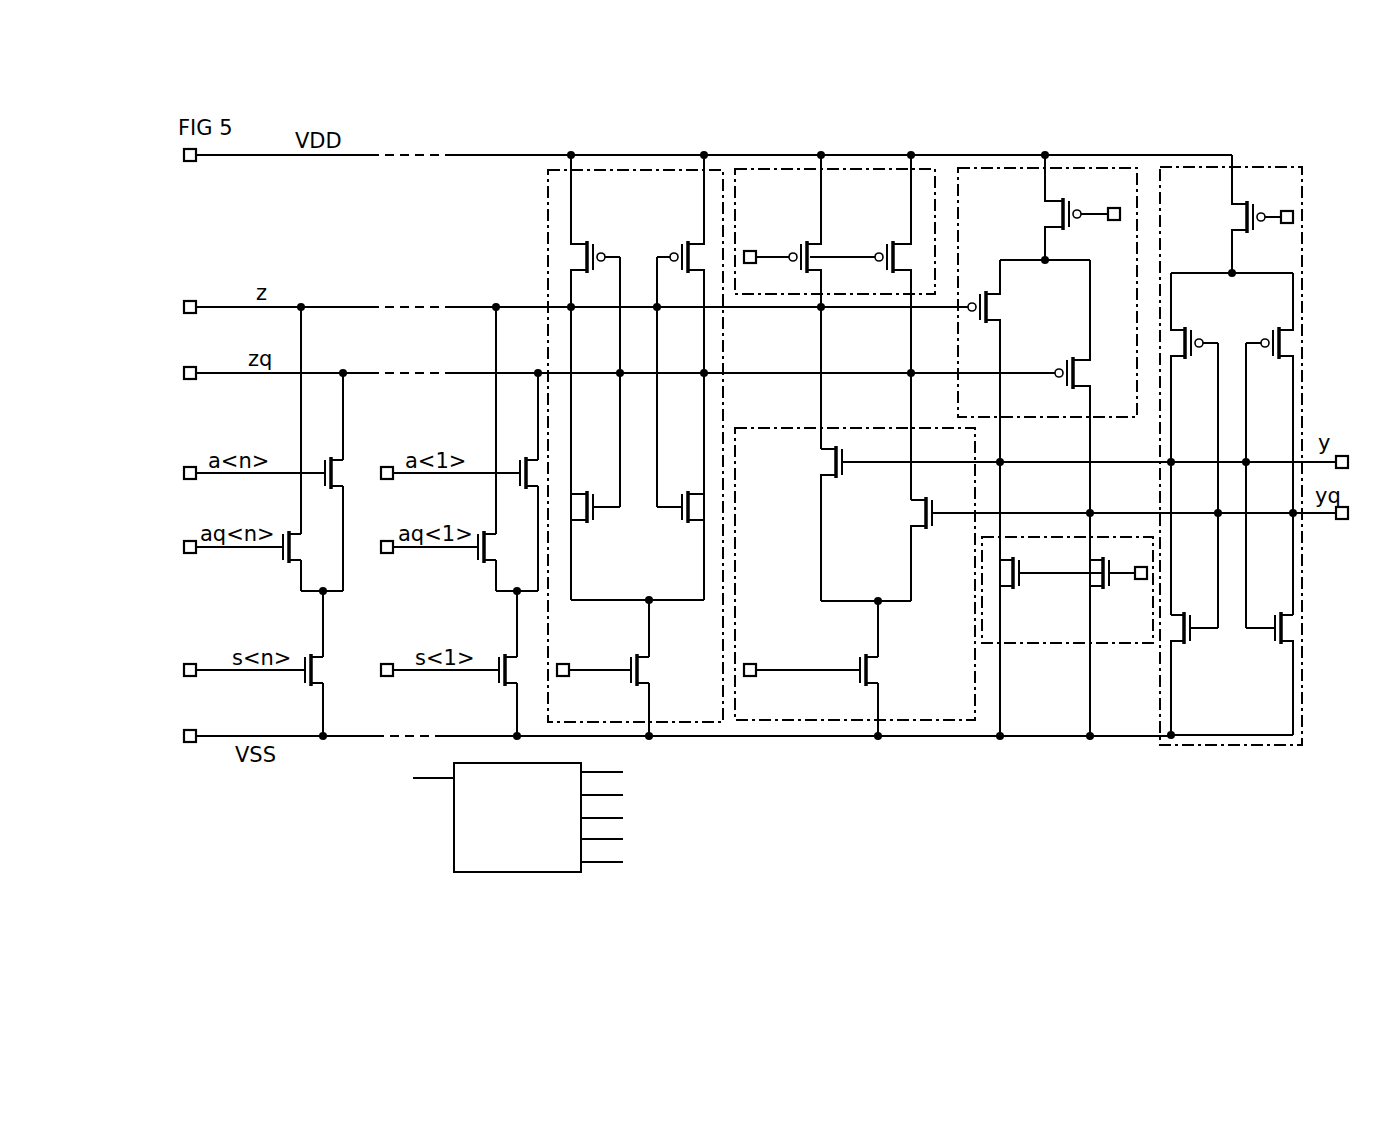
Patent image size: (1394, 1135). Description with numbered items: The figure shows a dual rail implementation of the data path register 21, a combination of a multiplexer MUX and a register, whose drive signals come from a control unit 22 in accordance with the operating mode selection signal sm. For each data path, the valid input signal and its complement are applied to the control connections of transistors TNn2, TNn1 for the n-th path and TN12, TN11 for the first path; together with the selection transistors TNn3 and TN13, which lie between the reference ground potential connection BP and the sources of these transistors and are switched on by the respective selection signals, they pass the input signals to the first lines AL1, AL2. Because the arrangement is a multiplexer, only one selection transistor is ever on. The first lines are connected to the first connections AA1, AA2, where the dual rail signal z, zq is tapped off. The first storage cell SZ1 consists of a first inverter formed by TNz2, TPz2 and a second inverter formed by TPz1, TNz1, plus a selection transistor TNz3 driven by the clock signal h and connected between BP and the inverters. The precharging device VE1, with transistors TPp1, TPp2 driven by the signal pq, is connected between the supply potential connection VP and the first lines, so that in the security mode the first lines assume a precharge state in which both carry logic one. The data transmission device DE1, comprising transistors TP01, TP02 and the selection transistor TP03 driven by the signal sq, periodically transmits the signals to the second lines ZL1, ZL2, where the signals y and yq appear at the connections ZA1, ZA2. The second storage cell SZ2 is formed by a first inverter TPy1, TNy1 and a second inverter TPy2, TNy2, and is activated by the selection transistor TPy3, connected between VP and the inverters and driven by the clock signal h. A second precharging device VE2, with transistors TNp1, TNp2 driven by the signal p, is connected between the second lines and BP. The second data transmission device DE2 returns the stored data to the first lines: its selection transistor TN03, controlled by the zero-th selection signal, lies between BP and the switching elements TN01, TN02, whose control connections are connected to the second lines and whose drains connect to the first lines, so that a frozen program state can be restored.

The data path register 21 is at (1238, 777).
The control unit 22 is at (454, 818).
The multiplexer MUX is at (458, 172).
The first storage cell SZ1 is at (657, 168).
The second storage cell SZ2 is at (1262, 166).
The precharging device VE1 is at (792, 168).
The precharging device VE2 is at (1040, 644).
The data transmission device DE1 is at (985, 168).
The second data transmission device DE2 is at (796, 427).
The first line AL1 is at (462, 303).
The first line AL2 is at (462, 369).
The second line ZL1 is at (1012, 470).
The second line ZL2 is at (1132, 512).
The supply potential connection VP is at (192, 161).
The reference ground potential connection BP is at (192, 730).
The first connection AA1 is at (192, 301).
The first connection AA2 is at (192, 367).
The second output connection ZA1 is at (1340, 456).
The second output connection ZA2 is at (1340, 519).
The transistor TNn1 is at (284, 535).
The transistor TNn2 is at (326, 462).
The selection transistor TNn3 is at (302, 680).
The transistor TN11 is at (478, 562).
The transistor TN12 is at (512, 480).
The selection transistor TN13 is at (496, 680).
The transistor TPz1 is at (680, 245).
The transistor TPz2 is at (596, 250).
The transistor TNz1 is at (684, 525).
The transistor TNz2 is at (595, 518).
The selection transistor TNz3 is at (628, 680).
The transistor TPp1 is at (888, 245).
The transistor TPp2 is at (800, 240).
The transistor TP01 is at (1070, 358).
The transistor TP02 is at (990, 305).
The selection transistor TP03 is at (1055, 220).
The transistor TN01 is at (920, 515).
The transistor TN02 is at (830, 463).
The selection transistor TN03 is at (858, 680).
The transistor TNp1 is at (1112, 585).
The transistor TNp2 is at (1022, 585).
The transistor TPy1 is at (1194, 336).
The transistor TPy2 is at (1274, 328).
The selection transistor TPy3 is at (1240, 220).
The transistor TNy1 is at (1192, 642).
The transistor TNy2 is at (1268, 645).